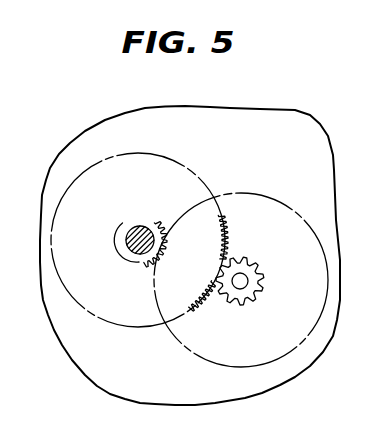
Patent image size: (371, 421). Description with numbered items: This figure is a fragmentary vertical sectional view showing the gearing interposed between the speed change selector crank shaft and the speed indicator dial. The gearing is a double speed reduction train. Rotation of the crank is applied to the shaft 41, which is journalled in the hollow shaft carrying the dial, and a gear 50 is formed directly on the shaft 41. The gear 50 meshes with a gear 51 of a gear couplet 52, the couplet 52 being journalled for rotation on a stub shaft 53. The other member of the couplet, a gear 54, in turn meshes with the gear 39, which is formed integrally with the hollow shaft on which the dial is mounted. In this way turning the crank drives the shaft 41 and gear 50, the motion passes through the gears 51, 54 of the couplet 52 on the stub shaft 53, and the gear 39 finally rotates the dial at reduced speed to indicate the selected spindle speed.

The gear 39 is at (227, 238).
The shaft 41 is at (135, 247).
The gear 50 is at (158, 224).
The gear 51 is at (153, 278).
The gear couplet 52 is at (282, 202).
The stub shaft 53 is at (241, 280).
The gear 54 is at (225, 303).